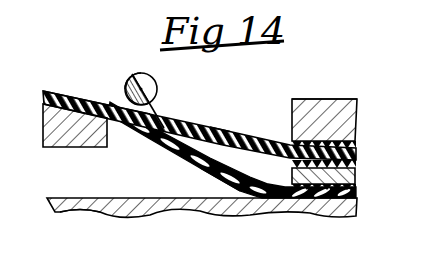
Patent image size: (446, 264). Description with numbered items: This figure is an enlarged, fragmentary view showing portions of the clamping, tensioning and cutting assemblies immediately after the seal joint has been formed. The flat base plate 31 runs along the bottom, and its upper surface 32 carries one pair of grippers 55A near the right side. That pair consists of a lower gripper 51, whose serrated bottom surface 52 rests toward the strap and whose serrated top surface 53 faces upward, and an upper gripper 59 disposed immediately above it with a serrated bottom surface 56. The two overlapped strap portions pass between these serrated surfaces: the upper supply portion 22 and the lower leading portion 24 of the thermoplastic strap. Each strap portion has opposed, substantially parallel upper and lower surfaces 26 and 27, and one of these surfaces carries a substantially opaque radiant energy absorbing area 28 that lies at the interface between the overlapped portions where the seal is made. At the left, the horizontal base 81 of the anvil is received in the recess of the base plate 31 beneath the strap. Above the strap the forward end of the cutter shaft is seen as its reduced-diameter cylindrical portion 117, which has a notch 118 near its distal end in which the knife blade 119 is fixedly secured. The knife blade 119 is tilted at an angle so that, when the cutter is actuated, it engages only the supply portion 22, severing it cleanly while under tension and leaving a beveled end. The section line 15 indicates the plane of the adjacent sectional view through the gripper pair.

The section line 15- 15 is at (300, 154).
The supply portion of the strap 22 is at (199, 125).
The leading portion of the strap 24 is at (232, 150).
The upper surface of the strap portion 26 is at (96, 84).
The lower surface of the strap portion 27 is at (202, 177).
The opaque radiant energy absorbing area 28 is at (218, 123).
The base plate 31 is at (83, 230).
The upper surface of the base plate 32 is at (196, 194).
The lower gripper 51 is at (351, 181).
The serrated bottom surface of the lower gripper 52 is at (348, 201).
The serrated top surface of the lower gripper 53 is at (347, 164).
The pair of grippers 55A is at (344, 76).
The serrated bottom surface of the upper gripper 56 is at (348, 137).
The upper gripper 59 is at (346, 118).
The base of the anvil 81 is at (58, 125).
The reduced-diameter cylindrical portion of the shaft 117 is at (116, 71).
The notch 118 is at (160, 81).
The knife blade 119 is at (169, 101).